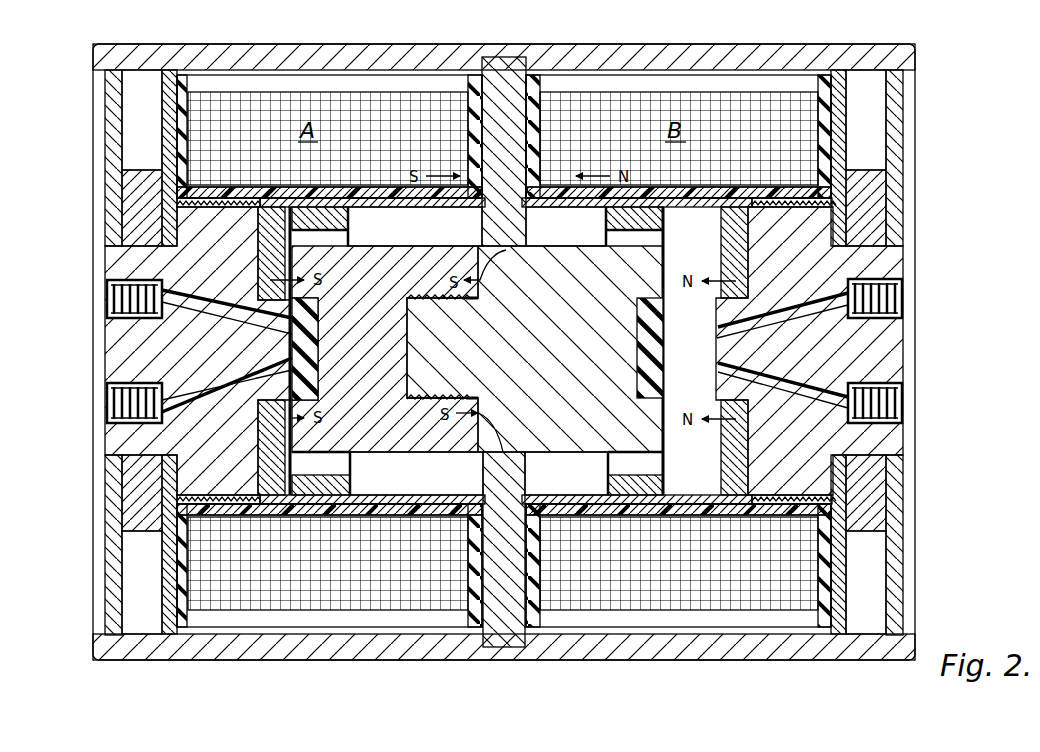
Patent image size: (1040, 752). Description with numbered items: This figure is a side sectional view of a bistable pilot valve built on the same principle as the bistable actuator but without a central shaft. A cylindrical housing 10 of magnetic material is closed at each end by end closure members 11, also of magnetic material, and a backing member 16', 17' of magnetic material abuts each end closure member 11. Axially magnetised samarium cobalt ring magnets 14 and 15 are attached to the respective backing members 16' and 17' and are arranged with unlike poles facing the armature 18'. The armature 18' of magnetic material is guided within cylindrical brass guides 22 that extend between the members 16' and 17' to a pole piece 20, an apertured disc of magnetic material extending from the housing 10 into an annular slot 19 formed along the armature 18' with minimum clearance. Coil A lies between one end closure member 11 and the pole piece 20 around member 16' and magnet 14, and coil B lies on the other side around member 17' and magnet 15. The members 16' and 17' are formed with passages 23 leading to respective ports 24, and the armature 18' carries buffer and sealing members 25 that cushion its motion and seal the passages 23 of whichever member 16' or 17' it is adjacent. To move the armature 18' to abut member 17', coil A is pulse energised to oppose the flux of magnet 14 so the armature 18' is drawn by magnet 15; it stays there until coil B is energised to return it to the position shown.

The cylindrical housing 10 is at (523, 50).
The end closure member 11 is at (127, 210).
The ring magnet 14 is at (260, 427).
The ring magnet 15 is at (732, 461).
The backing member 16' is at (197, 351).
The backing member 17' is at (809, 351).
The armature 18' is at (560, 342).
The annular slot 19 is at (413, 246).
The pole piece 20 is at (497, 479).
The cylindrical brass guide 22 is at (388, 495).
The passage 23 is at (205, 305).
The port 24 is at (107, 300).
The buffer and sealing member 25 is at (322, 312).